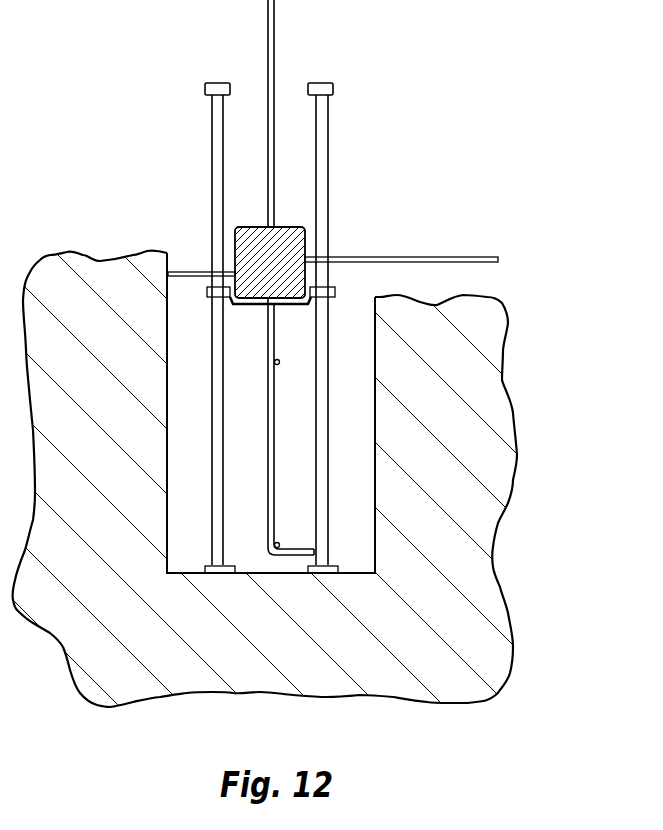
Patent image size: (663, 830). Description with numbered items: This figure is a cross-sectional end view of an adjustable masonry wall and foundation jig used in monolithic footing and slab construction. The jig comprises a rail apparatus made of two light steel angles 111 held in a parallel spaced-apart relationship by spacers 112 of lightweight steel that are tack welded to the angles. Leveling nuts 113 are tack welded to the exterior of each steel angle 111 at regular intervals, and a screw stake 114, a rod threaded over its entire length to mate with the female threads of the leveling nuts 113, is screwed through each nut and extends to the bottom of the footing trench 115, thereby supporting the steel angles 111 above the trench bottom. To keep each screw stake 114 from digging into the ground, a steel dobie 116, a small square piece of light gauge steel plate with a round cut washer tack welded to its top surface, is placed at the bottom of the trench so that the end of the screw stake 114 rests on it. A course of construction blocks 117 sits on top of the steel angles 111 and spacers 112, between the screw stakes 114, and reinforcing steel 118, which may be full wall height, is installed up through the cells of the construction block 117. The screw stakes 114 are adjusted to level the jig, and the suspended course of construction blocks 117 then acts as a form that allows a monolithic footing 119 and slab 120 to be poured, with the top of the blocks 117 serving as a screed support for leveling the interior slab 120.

The steel angle 111 is at (313, 302).
The spacer 112 is at (288, 307).
The leveling nut 113 is at (332, 290).
The screw stake 114 is at (330, 122).
The footing trench 115 is at (170, 385).
The steel dobie 116 is at (332, 566).
The construction block 117 is at (250, 242).
The reinforcing steel 118 is at (274, 13).
The monolithic footing 119 is at (183, 293).
The slab 120 is at (470, 280).